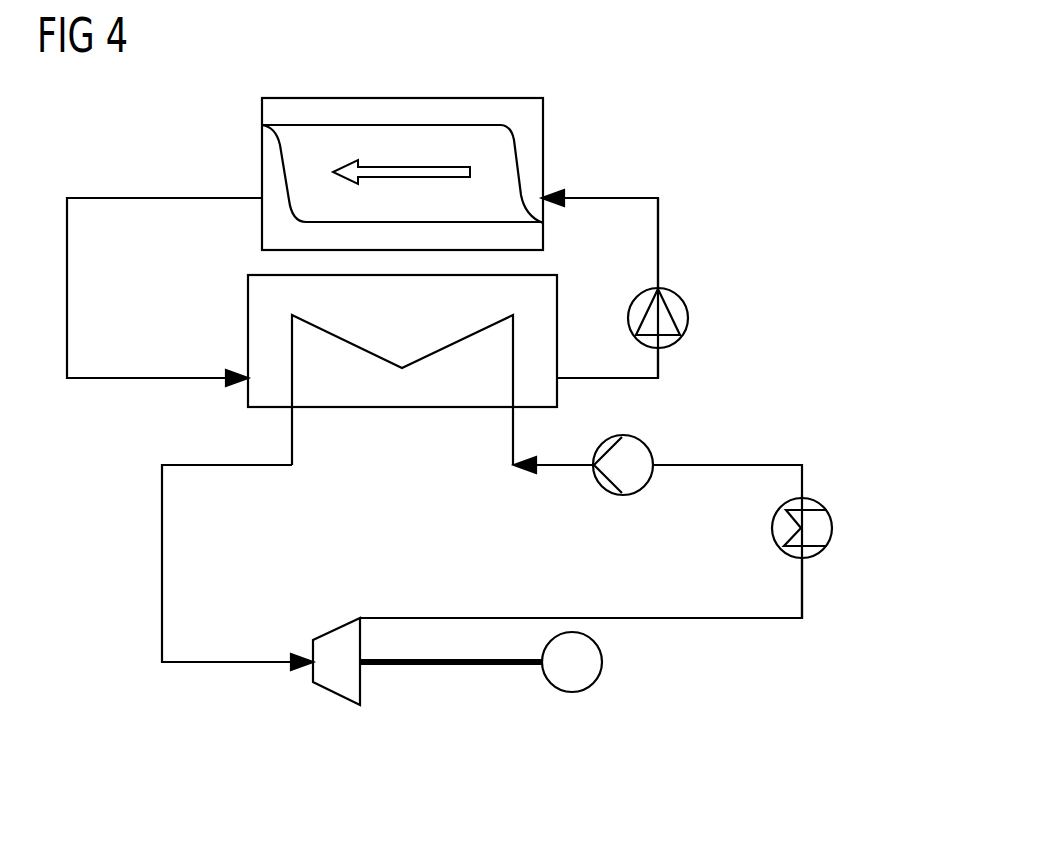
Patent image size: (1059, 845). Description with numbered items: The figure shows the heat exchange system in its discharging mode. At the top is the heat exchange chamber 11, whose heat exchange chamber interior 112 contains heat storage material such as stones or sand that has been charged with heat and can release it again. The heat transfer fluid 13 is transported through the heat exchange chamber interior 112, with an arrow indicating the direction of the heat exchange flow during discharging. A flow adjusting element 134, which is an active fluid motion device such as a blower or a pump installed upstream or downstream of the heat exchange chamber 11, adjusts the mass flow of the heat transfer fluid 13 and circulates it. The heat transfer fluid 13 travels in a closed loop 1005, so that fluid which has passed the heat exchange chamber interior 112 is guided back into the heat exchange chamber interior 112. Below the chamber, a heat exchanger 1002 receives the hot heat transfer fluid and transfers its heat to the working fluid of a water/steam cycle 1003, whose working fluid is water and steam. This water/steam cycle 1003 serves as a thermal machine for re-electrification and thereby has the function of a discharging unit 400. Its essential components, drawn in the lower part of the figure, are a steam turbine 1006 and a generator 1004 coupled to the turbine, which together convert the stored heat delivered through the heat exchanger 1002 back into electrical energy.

The heat exchange chamber 11 is at (543, 117).
The heat exchange chamber interior 112 is at (530, 105).
The heat transfer fluid 13 is at (388, 172).
The flow adjusting element 134 is at (689, 318).
The discharging unit 400 is at (138, 570).
The heat exchange system (heat exchanger) 1002 is at (248, 398).
The water/steam cycle 1003 is at (768, 653).
The generator 1004 is at (603, 662).
The closed loop 1005 is at (660, 243).
The steam turbine 1006 is at (362, 682).